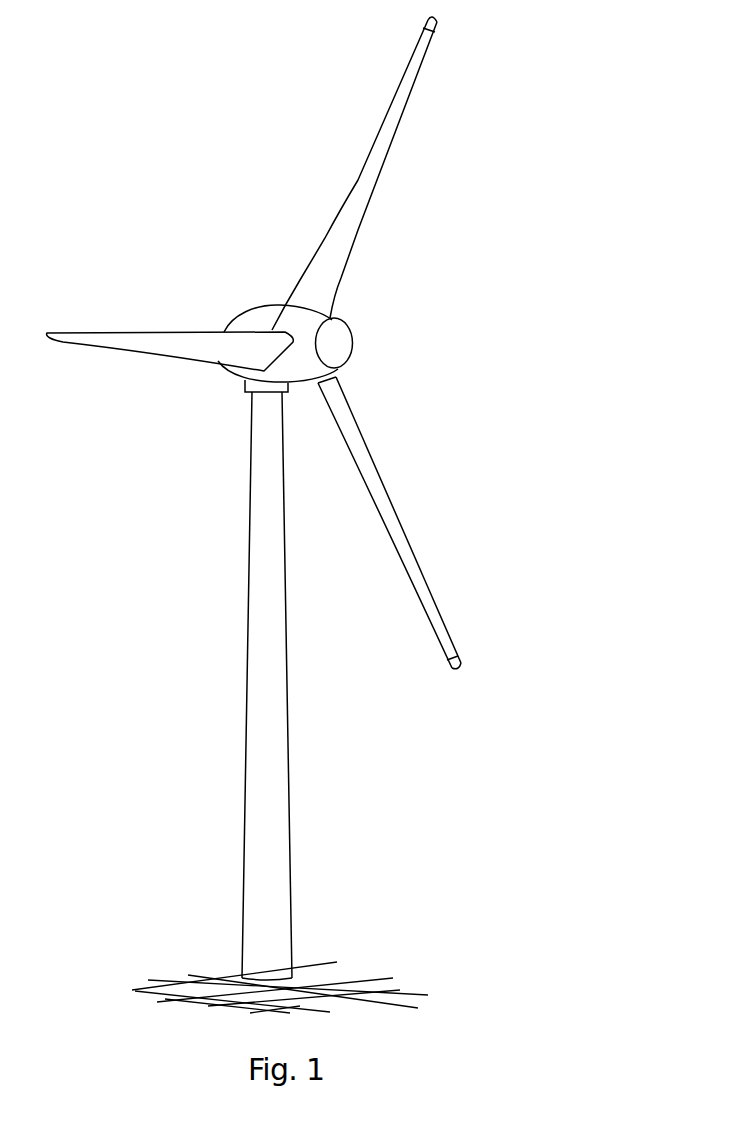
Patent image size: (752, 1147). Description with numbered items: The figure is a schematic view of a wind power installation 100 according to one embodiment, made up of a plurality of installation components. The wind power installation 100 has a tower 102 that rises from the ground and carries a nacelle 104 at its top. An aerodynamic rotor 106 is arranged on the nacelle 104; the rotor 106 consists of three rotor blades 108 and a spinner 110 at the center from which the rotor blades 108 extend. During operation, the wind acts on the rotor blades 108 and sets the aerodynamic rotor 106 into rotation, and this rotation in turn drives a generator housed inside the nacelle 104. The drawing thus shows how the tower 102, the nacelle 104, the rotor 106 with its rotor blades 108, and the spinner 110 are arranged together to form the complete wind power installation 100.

The wind power installation 100 is at (296, 515).
The tower 102 is at (272, 775).
The nacelle 104 is at (260, 318).
The aerodynamic rotor 106 is at (296, 343).
The rotor blades 108 is at (390, 128).
The spinner 110 is at (340, 340).